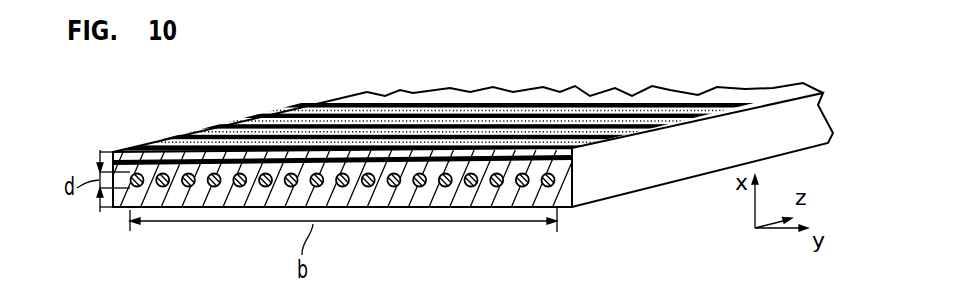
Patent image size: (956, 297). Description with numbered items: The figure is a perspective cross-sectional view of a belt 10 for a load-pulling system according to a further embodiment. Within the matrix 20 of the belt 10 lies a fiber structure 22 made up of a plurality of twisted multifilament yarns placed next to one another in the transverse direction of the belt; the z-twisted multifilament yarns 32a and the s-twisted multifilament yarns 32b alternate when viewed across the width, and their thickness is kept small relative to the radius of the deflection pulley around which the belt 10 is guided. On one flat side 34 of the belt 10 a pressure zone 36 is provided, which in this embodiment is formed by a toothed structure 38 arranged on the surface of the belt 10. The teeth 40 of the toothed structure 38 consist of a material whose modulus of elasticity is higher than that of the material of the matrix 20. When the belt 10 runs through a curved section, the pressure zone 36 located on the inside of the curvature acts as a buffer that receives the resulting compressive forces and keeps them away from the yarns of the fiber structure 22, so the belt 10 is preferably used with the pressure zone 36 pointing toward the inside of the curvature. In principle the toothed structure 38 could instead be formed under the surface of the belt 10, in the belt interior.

The belt 10 is at (644, 63).
The matrix 20 is at (122, 198).
The fiber structure 22 is at (307, 171).
The z-twisted multifilament yarns 32a is at (138, 176).
The s-twisted multifilament yarns 32b is at (163, 176).
The flat side 34 is at (371, 146).
The pressure zone 36 is at (410, 157).
The toothed structure 38 is at (465, 158).
The teeth 40 is at (513, 147).